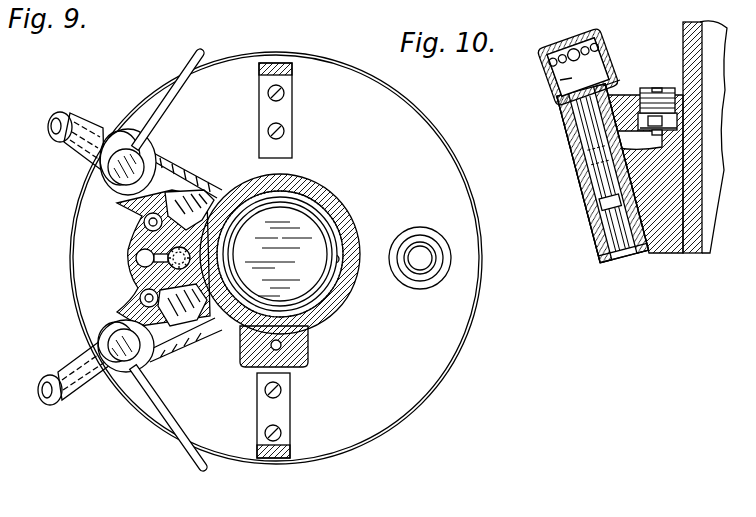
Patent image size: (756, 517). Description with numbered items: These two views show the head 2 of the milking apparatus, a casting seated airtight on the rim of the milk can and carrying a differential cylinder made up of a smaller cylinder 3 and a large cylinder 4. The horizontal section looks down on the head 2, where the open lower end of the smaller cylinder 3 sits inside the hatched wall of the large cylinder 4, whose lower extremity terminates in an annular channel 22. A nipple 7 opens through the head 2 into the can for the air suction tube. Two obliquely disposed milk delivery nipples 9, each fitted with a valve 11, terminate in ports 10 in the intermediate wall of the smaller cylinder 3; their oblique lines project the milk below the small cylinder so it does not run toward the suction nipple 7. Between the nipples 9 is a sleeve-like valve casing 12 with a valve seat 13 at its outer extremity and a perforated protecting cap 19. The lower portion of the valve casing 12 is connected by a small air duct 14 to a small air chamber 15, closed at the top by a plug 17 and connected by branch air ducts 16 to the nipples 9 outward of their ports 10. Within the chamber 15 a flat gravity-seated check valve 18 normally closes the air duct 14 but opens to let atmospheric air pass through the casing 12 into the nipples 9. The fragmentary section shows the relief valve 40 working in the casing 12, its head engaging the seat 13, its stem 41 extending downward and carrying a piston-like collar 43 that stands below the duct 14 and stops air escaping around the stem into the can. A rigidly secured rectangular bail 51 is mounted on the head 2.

In FIG. 9, the head 2 is at (313, 472).
In FIG. 9, the smaller cylinder 3 is at (320, 283).
In FIG. 9, the large cylinder 4 is at (310, 193).
In FIG. 10, the large cylinder 4 is at (707, 35).
In FIG. 9, the nipple 7 is at (428, 242).
In FIG. 9, the milk delivery nipples 9 is at (82, 128).
In FIG. 9, the ports 10 is at (214, 184).
In FIG. 9, the valves 11 is at (143, 158).
In FIG. 9, the valve casing 12 is at (135, 256).
In FIG. 10, the valve casing 12 is at (583, 165).
In FIG. 10, the valve seat 13 is at (607, 72).
In FIG. 9, the air duct 14 is at (132, 278).
In FIG. 10, the air duct 14 is at (607, 217).
In FIG. 9, the air chamber 15 is at (192, 298).
In FIG. 10, the air chamber 15 is at (670, 119).
In FIG. 9, the branch air ducts 16 is at (181, 178).
In FIG. 10, the plug 17 is at (661, 92).
In FIG. 9, the check valve 18 is at (190, 257).
In FIG. 10, the check valve 18 is at (650, 128).
In FIG. 10, the protecting cap 19 is at (583, 31).
In FIG. 9, the annular channel 22 is at (318, 328).
In FIG. 10, the relief valve 40 is at (585, 76).
In FIG. 10, the valve stem 41 is at (611, 262).
In FIG. 10, the piston-like collar 43 is at (608, 172).
In FIG. 9, the bail 51 is at (285, 112).